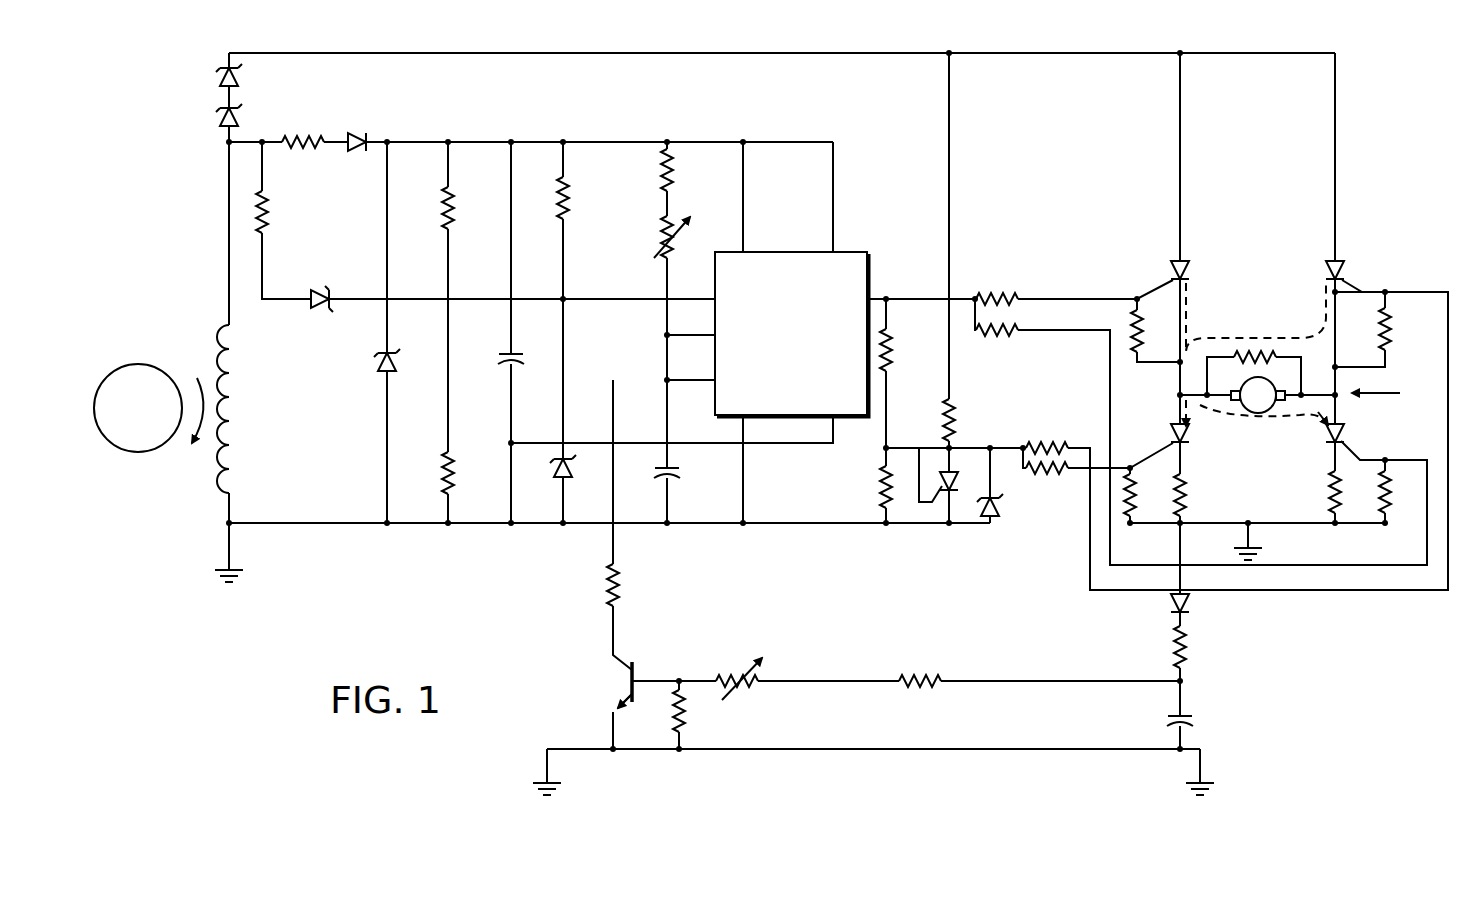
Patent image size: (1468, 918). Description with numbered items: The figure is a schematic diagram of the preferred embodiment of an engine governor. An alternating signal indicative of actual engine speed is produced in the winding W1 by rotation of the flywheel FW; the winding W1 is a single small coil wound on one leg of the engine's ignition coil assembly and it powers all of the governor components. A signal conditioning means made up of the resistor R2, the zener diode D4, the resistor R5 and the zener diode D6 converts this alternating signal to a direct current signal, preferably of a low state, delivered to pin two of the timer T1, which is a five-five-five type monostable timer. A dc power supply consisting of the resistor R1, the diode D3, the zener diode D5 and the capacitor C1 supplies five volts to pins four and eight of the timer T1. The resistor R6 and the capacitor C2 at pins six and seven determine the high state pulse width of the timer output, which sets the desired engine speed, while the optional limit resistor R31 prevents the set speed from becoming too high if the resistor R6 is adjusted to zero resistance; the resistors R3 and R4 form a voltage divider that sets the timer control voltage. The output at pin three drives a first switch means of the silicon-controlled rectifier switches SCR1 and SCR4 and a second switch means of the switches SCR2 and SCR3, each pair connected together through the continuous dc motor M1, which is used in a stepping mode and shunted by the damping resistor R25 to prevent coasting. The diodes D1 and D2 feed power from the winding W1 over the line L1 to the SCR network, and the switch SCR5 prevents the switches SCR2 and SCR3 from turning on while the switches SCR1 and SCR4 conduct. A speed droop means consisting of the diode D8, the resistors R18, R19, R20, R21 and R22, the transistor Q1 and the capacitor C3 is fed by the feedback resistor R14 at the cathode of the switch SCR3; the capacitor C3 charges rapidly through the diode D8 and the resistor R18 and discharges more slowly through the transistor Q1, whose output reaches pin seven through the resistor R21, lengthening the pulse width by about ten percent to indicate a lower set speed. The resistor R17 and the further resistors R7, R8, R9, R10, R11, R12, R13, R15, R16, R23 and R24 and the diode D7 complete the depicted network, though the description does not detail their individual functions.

The diode D1 is at (238, 122).
The diode D2 is at (238, 84).
The diode D3 is at (357, 132).
The zener diode D4 is at (316, 306).
The zener diode D5 is at (380, 366).
The zener diode D6 is at (573, 470).
The zener diode D7 is at (998, 506).
The diode D8 is at (1190, 606).
The resistor R1 is at (305, 152).
The resistor R2 is at (268, 218).
The resistor R3 is at (442, 206).
The resistor R4 is at (442, 470).
The resistor R5 is at (557, 200).
The resistor R6 is at (660, 234).
The resistor R7 is at (893, 354).
The resistor R8 is at (879, 488).
The resistor R9 is at (957, 420).
The resistor R10 is at (998, 292).
The resistor R11 is at (1000, 338).
The resistor R12 is at (1129, 326).
The resistor R13 is at (1135, 500).
The feedback resistor R14 is at (1188, 494).
The resistor R15 is at (1394, 328).
The resistor R16 is at (1393, 502).
The resistor R17 is at (1328, 488).
The resistor R18 is at (1190, 640).
The resistor R19 is at (920, 670).
The resistor R20 is at (732, 670).
The resistor R21 is at (622, 584).
The resistor R22 is at (690, 708).
The resistor R23 is at (1055, 445).
The resistor R24 is at (1058, 478).
The damping resistor R25 is at (1257, 350).
The limit resistor R31 is at (660, 176).
The capacitor C1 is at (540, 366).
The capacitor C2 is at (684, 472).
The capacitor C3 is at (1162, 722).
The silicon-controlled rectifier switch SCR1 is at (1170, 268).
The silicon-controlled rectifier switch SCR2 is at (1350, 266).
The silicon-controlled rectifier switch SCR3 is at (1170, 436).
The silicon-controlled rectifier switch SCR4 is at (1348, 438).
The switch SCR5 is at (940, 486).
The 555 timer T1 is at (866, 254).
The continuous dc motor M1 is at (1257, 414).
The winding W1 is at (238, 410).
The flywheel FW is at (129, 370).
The transistor Q1 is at (614, 684).
The line L1 is at (1127, 50).